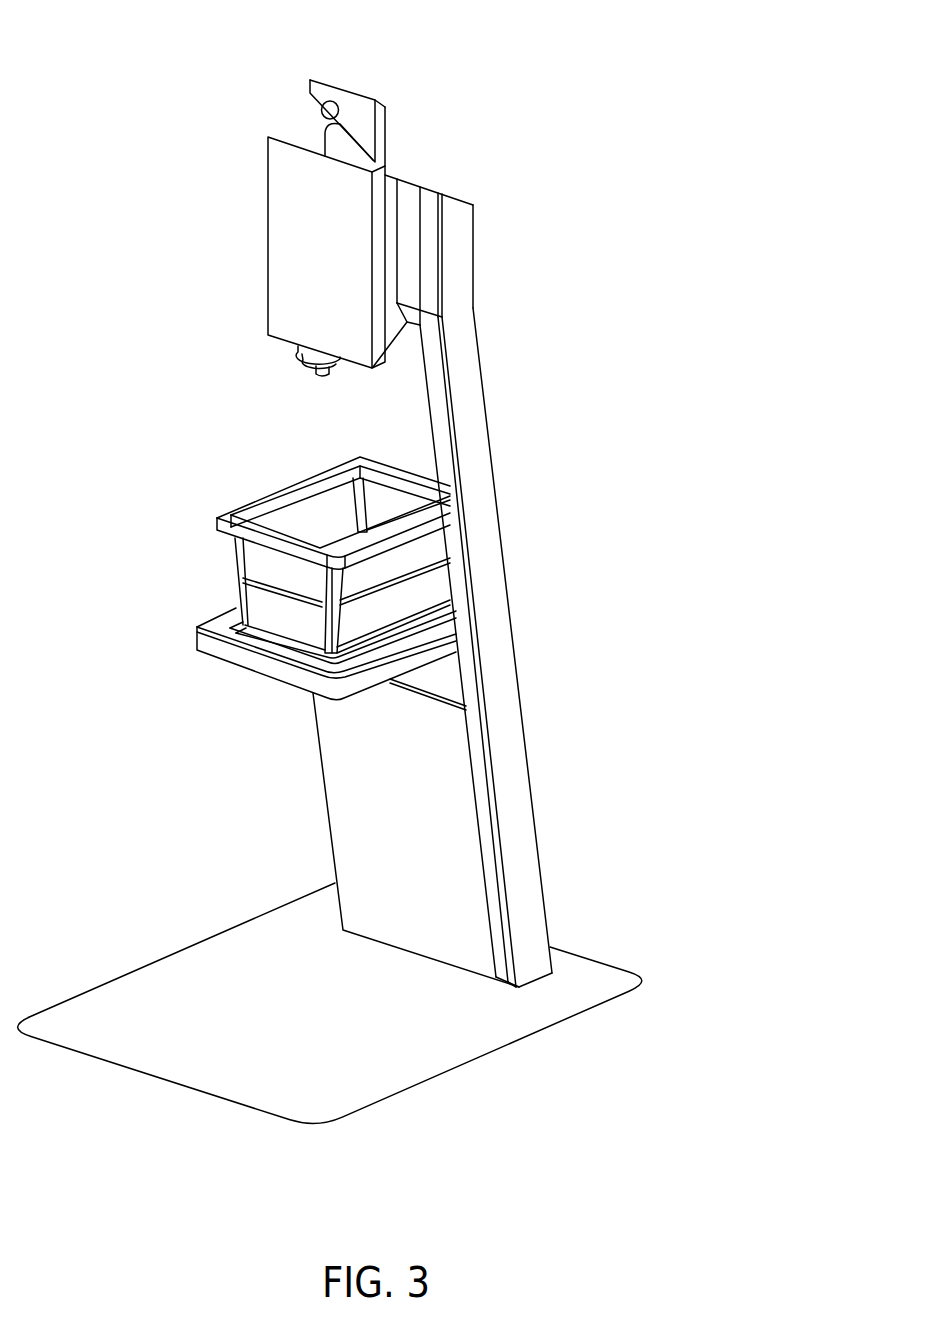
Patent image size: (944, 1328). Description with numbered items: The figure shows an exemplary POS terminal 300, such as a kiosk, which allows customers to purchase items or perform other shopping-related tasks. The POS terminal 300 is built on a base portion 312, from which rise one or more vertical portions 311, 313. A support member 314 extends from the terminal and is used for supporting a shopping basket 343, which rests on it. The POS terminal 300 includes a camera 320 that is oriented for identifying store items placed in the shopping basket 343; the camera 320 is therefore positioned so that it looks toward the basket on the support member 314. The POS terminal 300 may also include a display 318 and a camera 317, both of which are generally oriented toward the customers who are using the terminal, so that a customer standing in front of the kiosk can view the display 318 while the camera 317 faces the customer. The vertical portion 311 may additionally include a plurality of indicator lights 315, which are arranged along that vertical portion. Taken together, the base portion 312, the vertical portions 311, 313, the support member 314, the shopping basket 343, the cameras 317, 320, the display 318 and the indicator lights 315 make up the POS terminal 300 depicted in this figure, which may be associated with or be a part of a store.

The POS terminal 300 is at (603, 73).
The vertical portion 311 is at (497, 492).
The base portion 312 is at (467, 1035).
The vertical portion 313 is at (395, 793).
The support member 314 is at (183, 628).
The indicator lights 315 is at (427, 247).
The camera 317 is at (313, 103).
The display 318 is at (267, 247).
The camera 320 is at (317, 373).
The shopping basket 343 is at (260, 493).